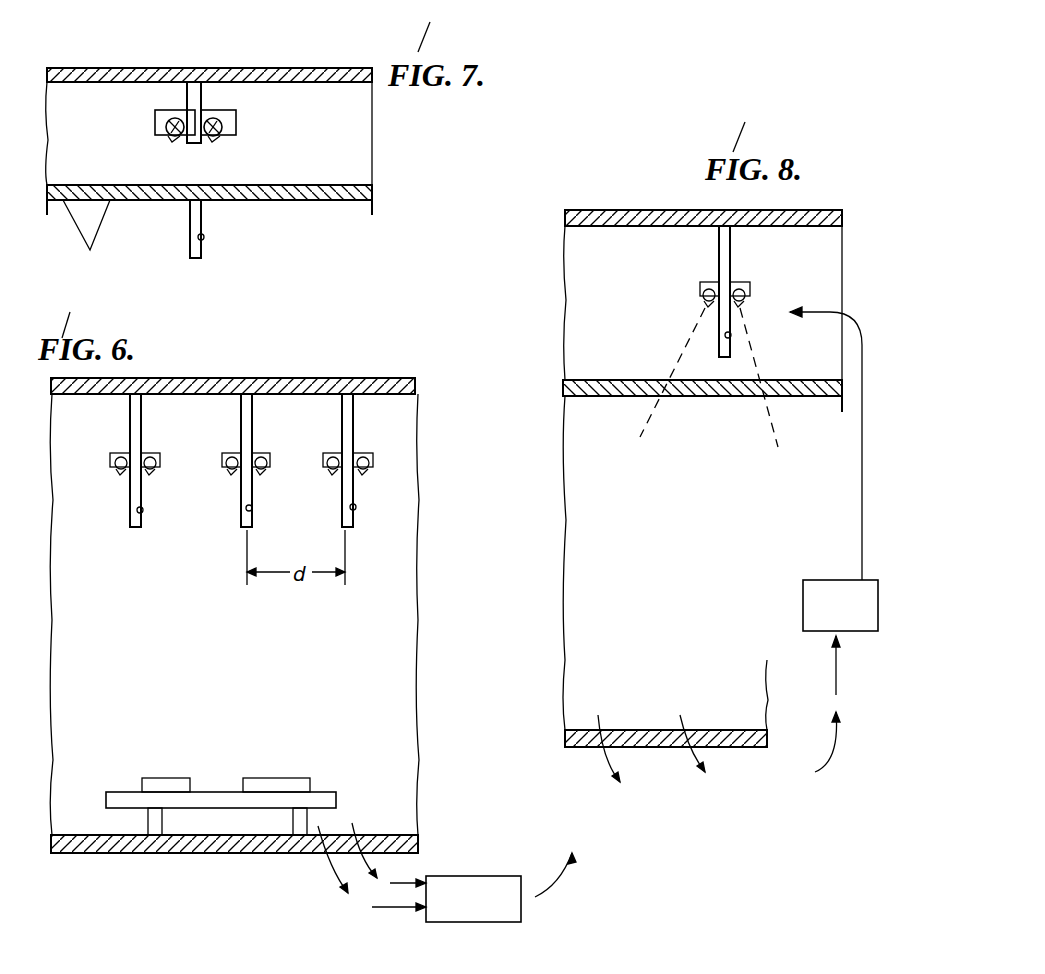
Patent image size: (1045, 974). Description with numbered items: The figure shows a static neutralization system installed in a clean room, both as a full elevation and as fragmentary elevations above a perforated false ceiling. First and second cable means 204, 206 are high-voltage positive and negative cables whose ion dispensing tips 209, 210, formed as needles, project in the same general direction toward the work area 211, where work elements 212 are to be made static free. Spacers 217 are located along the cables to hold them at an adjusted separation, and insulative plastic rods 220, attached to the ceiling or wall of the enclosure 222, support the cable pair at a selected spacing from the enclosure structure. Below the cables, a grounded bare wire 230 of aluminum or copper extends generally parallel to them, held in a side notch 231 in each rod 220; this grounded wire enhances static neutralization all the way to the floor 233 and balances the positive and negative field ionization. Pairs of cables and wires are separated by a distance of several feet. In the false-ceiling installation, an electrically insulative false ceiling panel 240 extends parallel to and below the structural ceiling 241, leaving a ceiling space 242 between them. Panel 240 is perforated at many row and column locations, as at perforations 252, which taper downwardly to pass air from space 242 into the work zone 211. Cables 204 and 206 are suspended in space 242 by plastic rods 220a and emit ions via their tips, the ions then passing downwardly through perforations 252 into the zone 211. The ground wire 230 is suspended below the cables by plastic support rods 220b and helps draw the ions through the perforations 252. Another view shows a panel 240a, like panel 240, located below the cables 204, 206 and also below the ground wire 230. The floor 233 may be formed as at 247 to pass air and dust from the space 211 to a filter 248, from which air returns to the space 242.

In FIG. 7, the first cable means 204 is at (230, 126).
In FIG. 6, the first cable means 204 is at (150, 455).
In FIG. 8, the first cable means 204 is at (740, 282).
In FIG. 7, the second cable means 206 is at (160, 127).
In FIG. 6, the second cable means 206 is at (118, 455).
In FIG. 8, the second cable means 206 is at (708, 282).
In FIG. 7, the ion dispensing tip 209 is at (170, 145).
In FIG. 7, the ion dispensing tip 210 is at (218, 145).
In FIG. 6, the work area 211 is at (234, 614).
In FIG. 8, the work area 211 is at (665, 563).
In FIG. 6, the work elements 212 is at (272, 778).
In FIG. 7, the spacer 217 is at (165, 110).
In FIG. 6, the spacer 217 is at (252, 455).
In FIG. 6, the insulative plastic rod 220 is at (343, 400).
In FIG. 8, the insulative plastic rod 220 is at (724, 291).
In FIG. 7, the plastic rod 220a is at (205, 95).
In FIG. 7, the plastic support rod 220b is at (203, 252).
In FIG. 6, the enclosure 222 is at (385, 378).
In FIG. 7, the bare wire 230 is at (204, 237).
In FIG. 6, the bare wire 230 is at (143, 511).
In FIG. 8, the bare wire 230 is at (731, 335).
In FIG. 6, the side notch 231 is at (252, 509).
In FIG. 6, the floor 233 is at (195, 843).
In FIG. 8, the floor 233 is at (745, 730).
In FIG. 7, the false ceiling panel 240 is at (372, 185).
In FIG. 8, the panel 240a is at (578, 398).
In FIG. 7, the structural ceiling 241 is at (64, 90).
In FIG. 8, the structural ceiling 241 is at (610, 234).
In FIG. 7, the ceiling space 242 is at (352, 117).
In FIG. 8, the ceiling space 242 is at (703, 303).
In FIG. 6, the floor air passage 247 is at (395, 835).
In FIG. 8, the floor air passage 247 is at (642, 730).
In FIG. 6, the filter 248 is at (470, 890).
In FIG. 8, the filter 248 is at (820, 585).
In FIG. 7, the perforations 252 is at (90, 241).
In FIG. 8, the perforations 252 is at (610, 380).